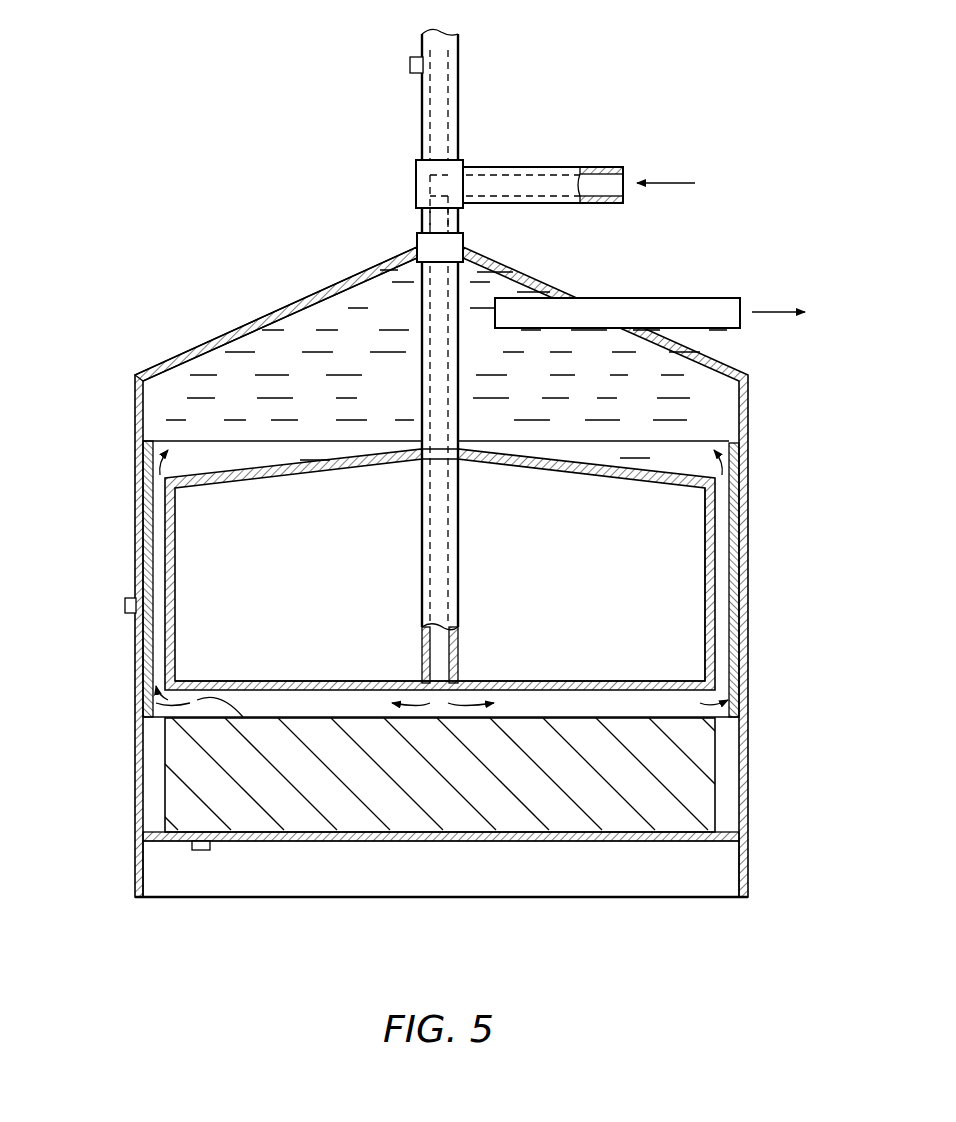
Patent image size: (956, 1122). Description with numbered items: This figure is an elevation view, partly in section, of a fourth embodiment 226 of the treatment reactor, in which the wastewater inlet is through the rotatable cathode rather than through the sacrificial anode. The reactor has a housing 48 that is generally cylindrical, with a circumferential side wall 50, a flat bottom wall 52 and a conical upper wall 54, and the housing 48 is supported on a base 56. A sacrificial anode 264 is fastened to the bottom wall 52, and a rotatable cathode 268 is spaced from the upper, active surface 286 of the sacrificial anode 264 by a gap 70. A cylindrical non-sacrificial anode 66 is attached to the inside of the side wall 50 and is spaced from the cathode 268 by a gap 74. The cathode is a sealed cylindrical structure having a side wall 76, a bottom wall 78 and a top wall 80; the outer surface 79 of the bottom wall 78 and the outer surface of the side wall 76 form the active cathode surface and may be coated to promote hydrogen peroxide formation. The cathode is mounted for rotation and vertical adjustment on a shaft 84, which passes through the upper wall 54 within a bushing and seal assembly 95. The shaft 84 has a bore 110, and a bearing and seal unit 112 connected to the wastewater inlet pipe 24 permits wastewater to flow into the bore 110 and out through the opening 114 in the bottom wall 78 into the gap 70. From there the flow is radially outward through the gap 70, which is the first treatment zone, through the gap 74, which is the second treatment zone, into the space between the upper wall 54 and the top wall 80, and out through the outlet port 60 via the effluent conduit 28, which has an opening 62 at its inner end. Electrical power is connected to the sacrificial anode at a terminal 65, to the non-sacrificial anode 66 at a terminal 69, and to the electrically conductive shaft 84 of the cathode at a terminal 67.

The wastewater inlet pipe 24 is at (605, 167).
The effluent conduit 28 is at (708, 310).
The housing 48 is at (406, 572).
The side wall 50 is at (147, 468).
The bottom wall 52 is at (317, 841).
The upper wall 54 is at (258, 317).
The base 56 is at (135, 862).
The outlet port 60 is at (580, 297).
The opening 62 is at (490, 297).
The terminal 65 is at (202, 850).
The non-sacrificial anode 66 is at (143, 444).
The terminal 67 is at (410, 62).
The terminal 69 is at (125, 600).
The gap 70 is at (660, 707).
The gap 74 is at (446, 573).
The side wall 76 is at (705, 558).
The bottom wall 78 is at (253, 680).
The outer surface 79 is at (320, 695).
The top wall 80 is at (557, 467).
The shaft 84 is at (441, 356).
The bushing and seal assembly 95 is at (418, 233).
The bore 110 is at (432, 645).
The bearing and seal unit 112 is at (463, 160).
The opening 114 is at (444, 683).
The fourth embodiment 226 is at (287, 247).
The sacrificial anode 264 is at (670, 780).
The rotatable cathode 268 is at (667, 625).
The active surface 286 is at (217, 718).